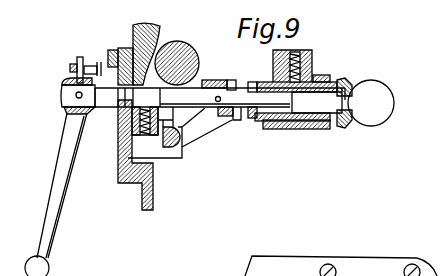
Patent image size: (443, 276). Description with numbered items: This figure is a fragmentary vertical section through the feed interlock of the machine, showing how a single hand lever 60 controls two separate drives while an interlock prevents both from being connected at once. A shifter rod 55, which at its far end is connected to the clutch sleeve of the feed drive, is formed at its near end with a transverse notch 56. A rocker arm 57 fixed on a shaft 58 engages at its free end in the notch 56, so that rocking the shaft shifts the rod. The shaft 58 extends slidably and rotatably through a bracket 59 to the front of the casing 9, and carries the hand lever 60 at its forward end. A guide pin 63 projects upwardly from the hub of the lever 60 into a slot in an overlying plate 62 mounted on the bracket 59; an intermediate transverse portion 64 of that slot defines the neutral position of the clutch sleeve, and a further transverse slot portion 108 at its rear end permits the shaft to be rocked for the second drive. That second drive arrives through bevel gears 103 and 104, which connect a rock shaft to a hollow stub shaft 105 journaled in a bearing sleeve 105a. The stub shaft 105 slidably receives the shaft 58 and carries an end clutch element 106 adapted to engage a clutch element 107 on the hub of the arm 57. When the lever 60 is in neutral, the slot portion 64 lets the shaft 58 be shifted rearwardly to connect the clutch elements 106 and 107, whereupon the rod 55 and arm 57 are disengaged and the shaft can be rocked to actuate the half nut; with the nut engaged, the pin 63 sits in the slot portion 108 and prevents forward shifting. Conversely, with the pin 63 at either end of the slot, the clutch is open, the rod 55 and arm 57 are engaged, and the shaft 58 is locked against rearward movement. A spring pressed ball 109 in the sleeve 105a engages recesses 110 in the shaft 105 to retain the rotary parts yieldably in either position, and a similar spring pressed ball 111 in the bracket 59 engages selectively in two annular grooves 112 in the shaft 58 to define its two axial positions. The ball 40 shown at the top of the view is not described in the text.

The casing 9 is at (143, 200).
The ball 40 is at (190, 48).
The shifter rod 55 is at (166, 144).
The transverse notch 56 is at (180, 150).
The rocker arm 57 is at (203, 124).
The shaft 58 is at (236, 112).
The bracket 59 is at (130, 48).
The hand lever 60 is at (57, 168).
The overlying plate 62 is at (72, 67).
The guide pin 63 is at (80, 57).
The intermediate transverse slot portion 64 is at (90, 66).
The bevel gear 103 is at (392, 86).
The bevel gear 104 is at (349, 78).
The hollow stub shaft 105 is at (328, 80).
The bearing sleeve 105a is at (270, 128).
The end clutch element 106 is at (253, 82).
The clutch element 107 is at (238, 80).
The transverse slot portion 108 is at (98, 62).
The spring pressed ball 109 is at (289, 67).
The recesses 110 is at (290, 127).
The spring pressed ball 111 is at (141, 121).
The annular grooves 112 is at (120, 106).